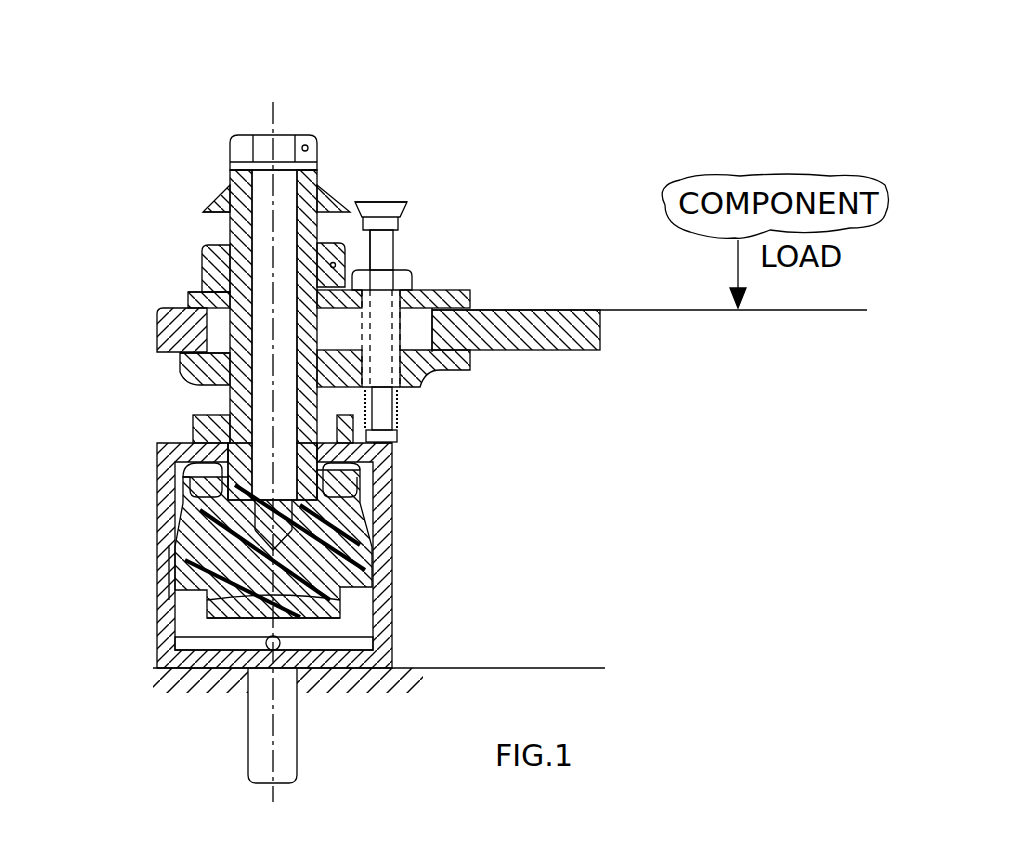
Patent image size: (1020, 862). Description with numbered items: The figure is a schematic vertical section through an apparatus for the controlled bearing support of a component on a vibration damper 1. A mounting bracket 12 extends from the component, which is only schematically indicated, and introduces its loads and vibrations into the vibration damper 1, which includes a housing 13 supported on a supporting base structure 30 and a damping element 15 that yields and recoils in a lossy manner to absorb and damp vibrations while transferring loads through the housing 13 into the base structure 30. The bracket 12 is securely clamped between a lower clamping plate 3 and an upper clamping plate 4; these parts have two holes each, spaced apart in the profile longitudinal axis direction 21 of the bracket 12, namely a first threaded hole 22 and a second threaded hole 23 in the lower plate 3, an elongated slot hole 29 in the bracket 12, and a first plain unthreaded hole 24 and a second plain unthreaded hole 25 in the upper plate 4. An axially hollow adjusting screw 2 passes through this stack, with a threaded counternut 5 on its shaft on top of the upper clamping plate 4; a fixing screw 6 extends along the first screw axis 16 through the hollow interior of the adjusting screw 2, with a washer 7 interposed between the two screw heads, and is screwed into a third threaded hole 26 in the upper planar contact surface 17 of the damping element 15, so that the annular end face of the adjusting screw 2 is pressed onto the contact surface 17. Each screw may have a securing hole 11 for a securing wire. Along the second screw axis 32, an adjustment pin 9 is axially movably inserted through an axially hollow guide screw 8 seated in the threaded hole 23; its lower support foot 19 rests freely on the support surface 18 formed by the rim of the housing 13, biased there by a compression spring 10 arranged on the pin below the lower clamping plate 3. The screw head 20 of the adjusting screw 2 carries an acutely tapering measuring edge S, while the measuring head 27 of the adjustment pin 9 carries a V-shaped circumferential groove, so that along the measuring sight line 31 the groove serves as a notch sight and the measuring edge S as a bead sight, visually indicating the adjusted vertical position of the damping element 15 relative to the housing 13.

The vibration damper 1 is at (385, 520).
The adjusting screw 2 is at (242, 407).
The lower clamping plate 3 is at (203, 372).
The upper clamping plate 4 is at (455, 297).
The threaded counternut 5 is at (203, 258).
The fixing screw 6 is at (243, 148).
The washer 7 is at (235, 168).
The guide screw 8 is at (412, 280).
The adjustment pin 9 is at (393, 250).
The compression spring 10 is at (398, 410).
The securing hole 11 is at (306, 146).
The mounting bracket 12 is at (600, 340).
The housing 13 is at (167, 612).
The damping element 15 is at (193, 563).
The first screw axis 16 is at (273, 70).
The upper planar contact surface 17 is at (212, 428).
The support surface 18 is at (410, 443).
The support foot 19 is at (400, 435).
The screw head 20 is at (227, 193).
The profile longitudinal axis direction 21 is at (175, 288).
The first threaded hole 22 is at (215, 390).
The second threaded hole 23 is at (412, 393).
The first plain unthreaded hole 24 is at (216, 315).
The second plain unthreaded hole 25 is at (447, 330).
The third threaded hole 26 is at (238, 485).
The measuring head 27 is at (395, 205).
The fourth elongated slot hole 29 is at (600, 310).
The supporting base structure 30 is at (612, 668).
The measuring sight line 31 is at (420, 212).
The second screw axis 32 is at (382, 155).
The measuring edge S is at (185, 212).